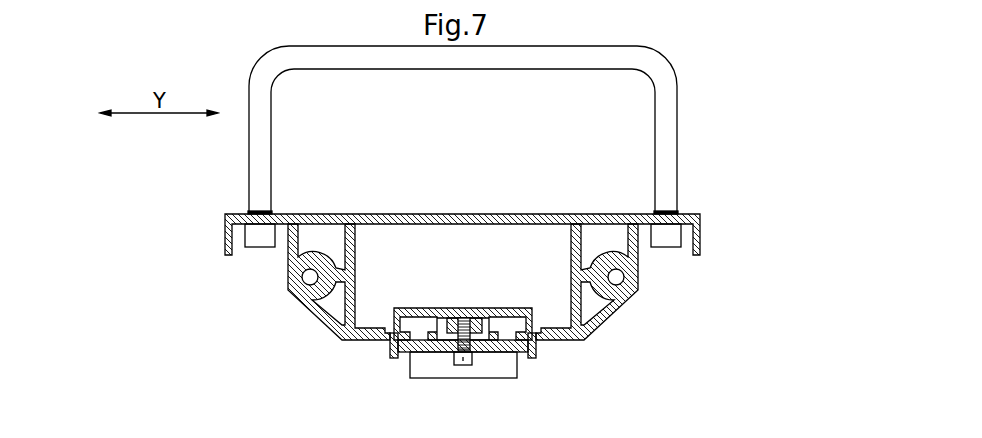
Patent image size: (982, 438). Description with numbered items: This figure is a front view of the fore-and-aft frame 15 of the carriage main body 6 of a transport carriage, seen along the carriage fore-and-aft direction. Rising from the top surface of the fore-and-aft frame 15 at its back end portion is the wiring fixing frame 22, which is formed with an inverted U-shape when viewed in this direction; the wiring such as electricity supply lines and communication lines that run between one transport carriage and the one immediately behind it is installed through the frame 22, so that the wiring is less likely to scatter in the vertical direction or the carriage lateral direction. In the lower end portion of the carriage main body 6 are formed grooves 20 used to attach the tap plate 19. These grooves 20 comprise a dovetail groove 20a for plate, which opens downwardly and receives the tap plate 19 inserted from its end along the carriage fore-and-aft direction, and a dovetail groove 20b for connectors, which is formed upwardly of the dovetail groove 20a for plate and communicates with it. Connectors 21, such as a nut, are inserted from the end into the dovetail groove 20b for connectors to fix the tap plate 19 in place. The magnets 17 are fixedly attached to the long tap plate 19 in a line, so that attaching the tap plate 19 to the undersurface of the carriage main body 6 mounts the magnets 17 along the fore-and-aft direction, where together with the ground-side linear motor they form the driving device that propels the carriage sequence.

The carriage main body 6 is at (717, 195).
The fore-and-aft frame 15 is at (423, 213).
The magnets 17 is at (500, 370).
The tap plate 19 is at (417, 354).
The grooves 20 is at (510, 313).
The dovetail groove for plate 20a is at (527, 355).
The dovetail groove for connectors 20b is at (448, 308).
The connectors 21 is at (465, 367).
The wiring fixing frame 22 is at (678, 132).